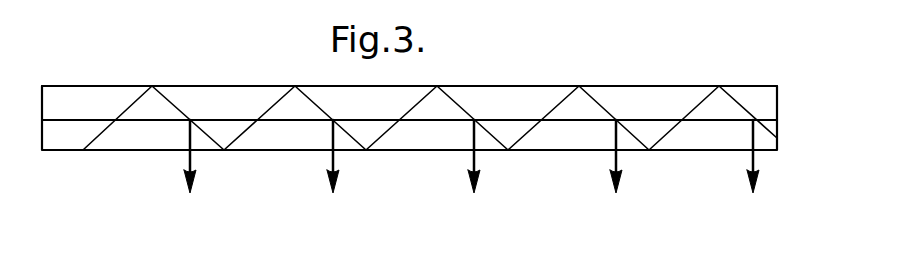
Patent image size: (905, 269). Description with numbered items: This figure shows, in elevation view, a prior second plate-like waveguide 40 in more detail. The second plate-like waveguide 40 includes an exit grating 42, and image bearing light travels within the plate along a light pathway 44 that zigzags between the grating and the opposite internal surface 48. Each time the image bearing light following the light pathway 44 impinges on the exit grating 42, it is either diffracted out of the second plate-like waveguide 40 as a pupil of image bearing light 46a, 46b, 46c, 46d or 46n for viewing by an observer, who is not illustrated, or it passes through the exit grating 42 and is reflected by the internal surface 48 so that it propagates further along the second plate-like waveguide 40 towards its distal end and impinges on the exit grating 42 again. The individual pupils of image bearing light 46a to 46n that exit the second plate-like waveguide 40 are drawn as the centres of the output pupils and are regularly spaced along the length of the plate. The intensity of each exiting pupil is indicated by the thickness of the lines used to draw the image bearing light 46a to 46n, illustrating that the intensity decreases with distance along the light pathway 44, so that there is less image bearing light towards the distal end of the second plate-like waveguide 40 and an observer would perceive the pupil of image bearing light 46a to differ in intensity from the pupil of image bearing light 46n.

The second plate-like waveguide 40 is at (233, 86).
The exit grating 42 is at (157, 122).
The light pathway 44 is at (92, 141).
The internal surface 48 is at (488, 86).
The pupil of image bearing light 46a is at (196, 178).
The pupil of image bearing light 46b is at (340, 180).
The pupil of image bearing light 46c is at (481, 180).
The pupil of image bearing light 46d is at (620, 180).
The pupil of image bearing light 46n is at (760, 180).